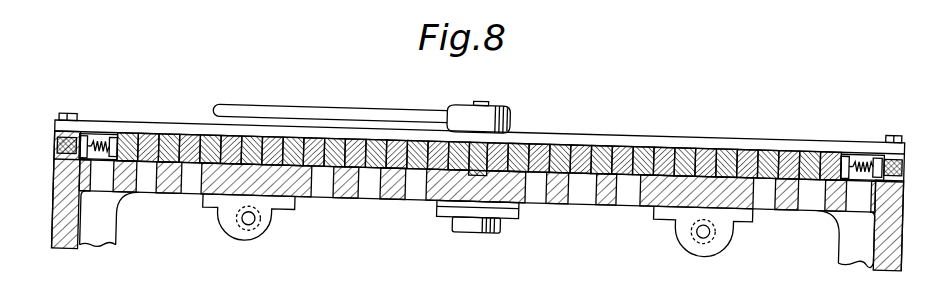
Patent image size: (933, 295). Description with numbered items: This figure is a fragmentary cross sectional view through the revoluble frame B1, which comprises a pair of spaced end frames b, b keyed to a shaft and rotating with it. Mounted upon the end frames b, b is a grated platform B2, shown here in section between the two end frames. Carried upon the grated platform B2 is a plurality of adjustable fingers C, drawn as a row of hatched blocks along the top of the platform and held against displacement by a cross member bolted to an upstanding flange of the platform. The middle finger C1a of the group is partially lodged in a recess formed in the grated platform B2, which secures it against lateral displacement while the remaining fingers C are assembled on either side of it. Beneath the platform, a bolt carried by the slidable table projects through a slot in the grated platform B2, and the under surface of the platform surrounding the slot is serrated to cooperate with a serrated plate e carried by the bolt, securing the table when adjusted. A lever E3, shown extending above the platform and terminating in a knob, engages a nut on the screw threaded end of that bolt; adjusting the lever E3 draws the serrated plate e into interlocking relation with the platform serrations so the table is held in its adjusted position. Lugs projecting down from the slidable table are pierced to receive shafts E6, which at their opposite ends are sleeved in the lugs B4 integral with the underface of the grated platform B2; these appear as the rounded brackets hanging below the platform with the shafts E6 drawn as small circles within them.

The adjustable fingers C is at (145, 135).
The middle finger C1a is at (478, 160).
The lever E3 is at (357, 105).
The shaft E6 is at (733, 240).
The lug B4 is at (699, 252).
The grated platform B2 is at (347, 192).
The revoluble frame B1 is at (832, 241).
The serrated plate e is at (518, 212).
The end frame b is at (63, 249).